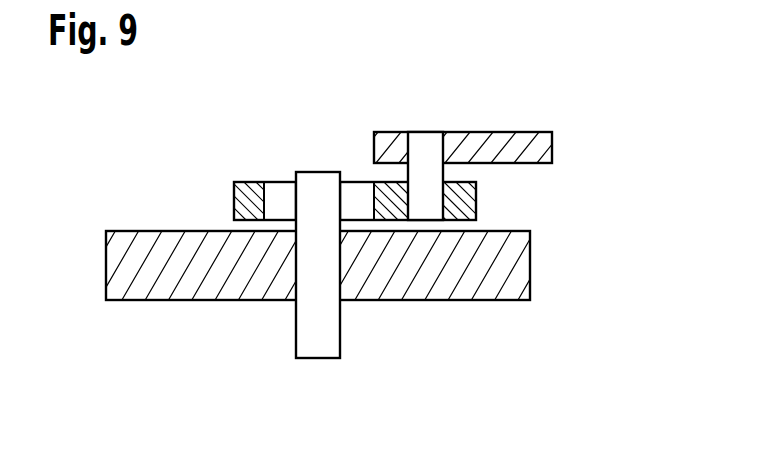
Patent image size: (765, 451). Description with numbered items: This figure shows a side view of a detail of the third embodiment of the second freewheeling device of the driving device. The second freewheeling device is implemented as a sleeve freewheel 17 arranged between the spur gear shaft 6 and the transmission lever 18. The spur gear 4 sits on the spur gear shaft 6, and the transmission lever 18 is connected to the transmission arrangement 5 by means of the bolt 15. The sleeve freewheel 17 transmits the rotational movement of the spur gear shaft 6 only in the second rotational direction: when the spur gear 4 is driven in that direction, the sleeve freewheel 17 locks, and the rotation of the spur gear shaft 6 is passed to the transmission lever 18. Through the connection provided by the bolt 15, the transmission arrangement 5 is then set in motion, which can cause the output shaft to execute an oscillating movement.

The spur gear 4 is at (117, 257).
The transmission arrangement 5 is at (530, 149).
The spur gear shaft 6 is at (322, 332).
The bolt 15 is at (425, 140).
The sleeve freewheel 17 is at (278, 192).
The transmission lever 18 is at (462, 205).